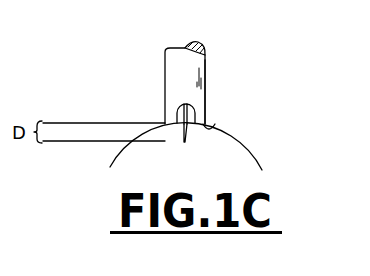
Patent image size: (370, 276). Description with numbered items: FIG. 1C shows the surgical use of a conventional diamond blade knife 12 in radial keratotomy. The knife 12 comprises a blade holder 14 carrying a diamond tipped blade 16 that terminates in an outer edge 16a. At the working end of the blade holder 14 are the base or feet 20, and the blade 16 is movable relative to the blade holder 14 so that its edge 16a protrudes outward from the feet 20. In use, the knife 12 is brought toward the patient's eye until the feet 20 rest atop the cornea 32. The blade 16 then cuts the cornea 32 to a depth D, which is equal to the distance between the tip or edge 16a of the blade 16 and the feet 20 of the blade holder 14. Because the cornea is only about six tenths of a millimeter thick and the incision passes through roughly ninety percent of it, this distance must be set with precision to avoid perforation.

The diamond blade knife 12 is at (163, 75).
The blade holder 14 is at (206, 72).
The diamond tipped blade 16 is at (188, 128).
The outer edge 16a is at (181, 137).
The feet 20 is at (210, 128).
The cornea 32 is at (249, 146).